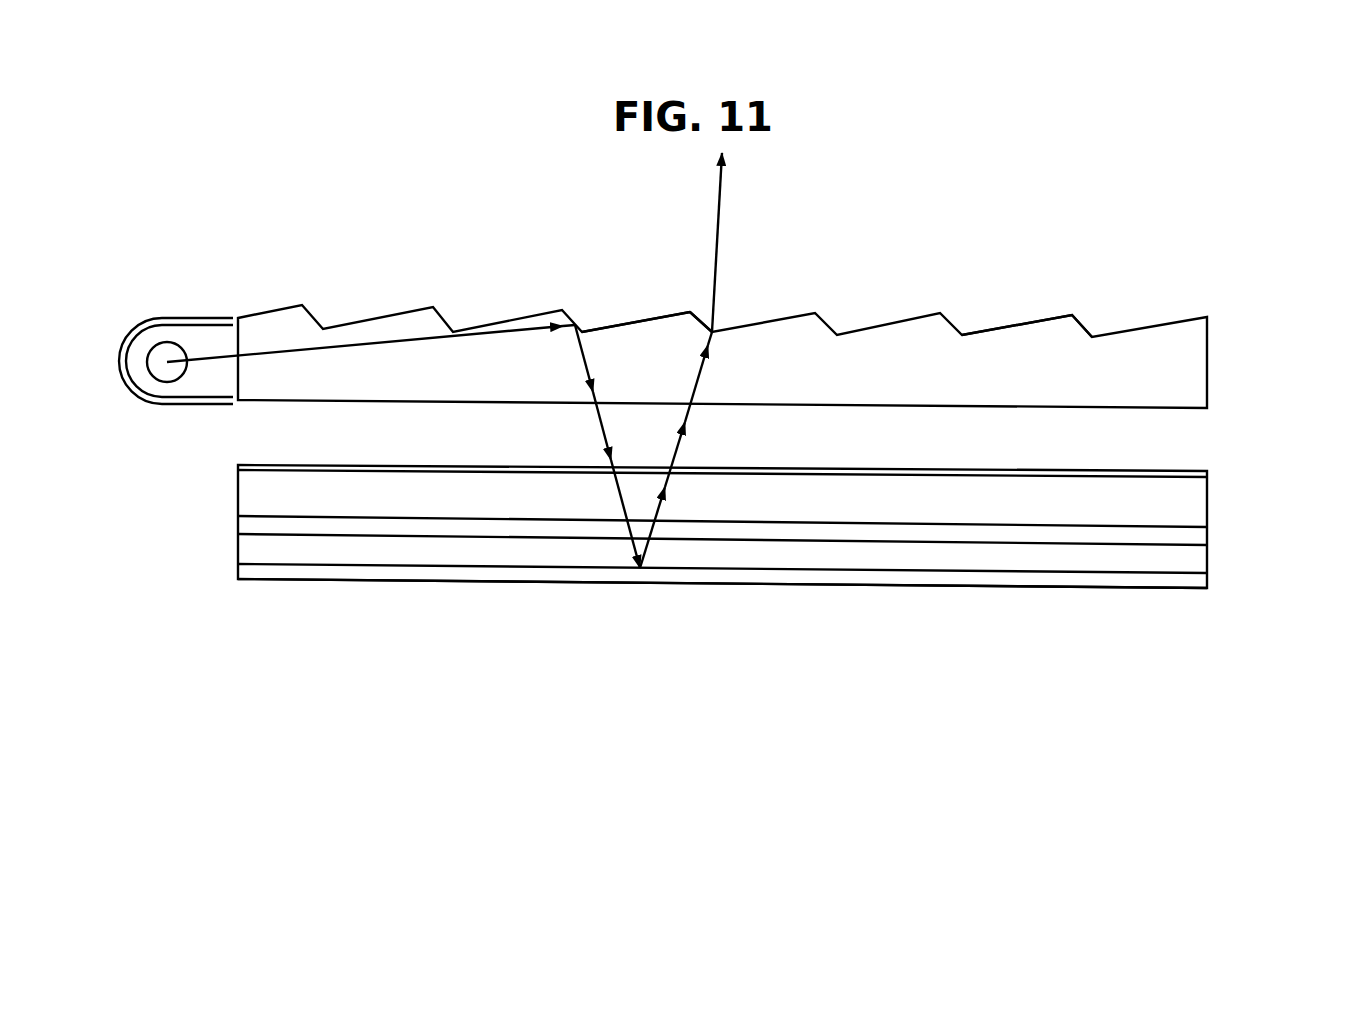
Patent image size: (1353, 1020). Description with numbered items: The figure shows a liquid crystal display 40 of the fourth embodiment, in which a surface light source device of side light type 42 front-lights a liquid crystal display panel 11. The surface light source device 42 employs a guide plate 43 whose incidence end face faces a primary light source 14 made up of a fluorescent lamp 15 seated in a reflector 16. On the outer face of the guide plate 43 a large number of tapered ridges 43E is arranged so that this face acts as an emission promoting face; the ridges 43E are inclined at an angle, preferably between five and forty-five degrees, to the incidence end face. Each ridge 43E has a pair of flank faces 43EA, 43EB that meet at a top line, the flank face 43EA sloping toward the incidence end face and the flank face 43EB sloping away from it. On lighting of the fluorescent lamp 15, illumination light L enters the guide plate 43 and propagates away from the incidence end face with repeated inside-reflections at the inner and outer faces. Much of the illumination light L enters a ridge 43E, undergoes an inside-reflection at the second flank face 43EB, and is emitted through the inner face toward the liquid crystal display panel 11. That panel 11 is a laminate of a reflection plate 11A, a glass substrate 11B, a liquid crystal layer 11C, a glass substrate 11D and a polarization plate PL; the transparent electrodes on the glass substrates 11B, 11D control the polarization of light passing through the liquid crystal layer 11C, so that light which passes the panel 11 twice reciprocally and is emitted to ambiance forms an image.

The liquid crystal display panel 11 is at (665, 643).
The reflection plate 11A is at (1195, 583).
The glass substrate 11B is at (1195, 565).
The liquid crystal layer 11C is at (1195, 540).
The glass substrate 11D is at (1195, 505).
The polarization plate PL is at (1207, 470).
The primary light source 14 is at (199, 288).
The fluorescent lamp 15 is at (162, 374).
The reflector 16 is at (127, 393).
The liquid crystal display 40 is at (331, 699).
The surface light source device of side light type 42 is at (838, 258).
The guide plate 43 is at (440, 310).
The ridge 43E is at (1048, 335).
The flank face 43EA is at (602, 325).
The flank face 43EB is at (690, 310).
The illumination light L is at (722, 205).